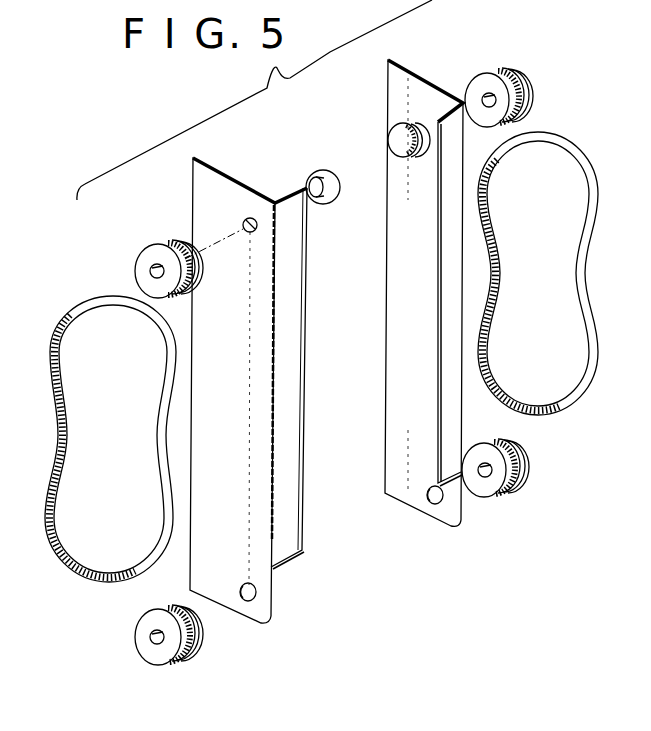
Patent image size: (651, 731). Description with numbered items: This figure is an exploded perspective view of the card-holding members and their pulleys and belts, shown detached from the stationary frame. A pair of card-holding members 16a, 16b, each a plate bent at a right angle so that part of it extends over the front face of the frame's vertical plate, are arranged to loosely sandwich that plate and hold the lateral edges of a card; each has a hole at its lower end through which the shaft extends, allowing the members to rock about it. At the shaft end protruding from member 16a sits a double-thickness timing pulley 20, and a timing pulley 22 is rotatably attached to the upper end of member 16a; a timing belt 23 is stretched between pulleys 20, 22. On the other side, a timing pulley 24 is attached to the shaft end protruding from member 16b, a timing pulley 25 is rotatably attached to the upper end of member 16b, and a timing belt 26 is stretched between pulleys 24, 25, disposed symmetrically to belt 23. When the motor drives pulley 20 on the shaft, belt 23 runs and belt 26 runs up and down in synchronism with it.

The card-holding member 16a is at (240, 182).
The card-holding member 16b is at (425, 76).
The timing pulley 20 is at (141, 627).
The timing pulley 22 is at (143, 257).
The timing belt 23 is at (62, 362).
The timing pulley 24 is at (531, 450).
The timing pulley 25 is at (528, 80).
The timing belt 26 is at (504, 238).